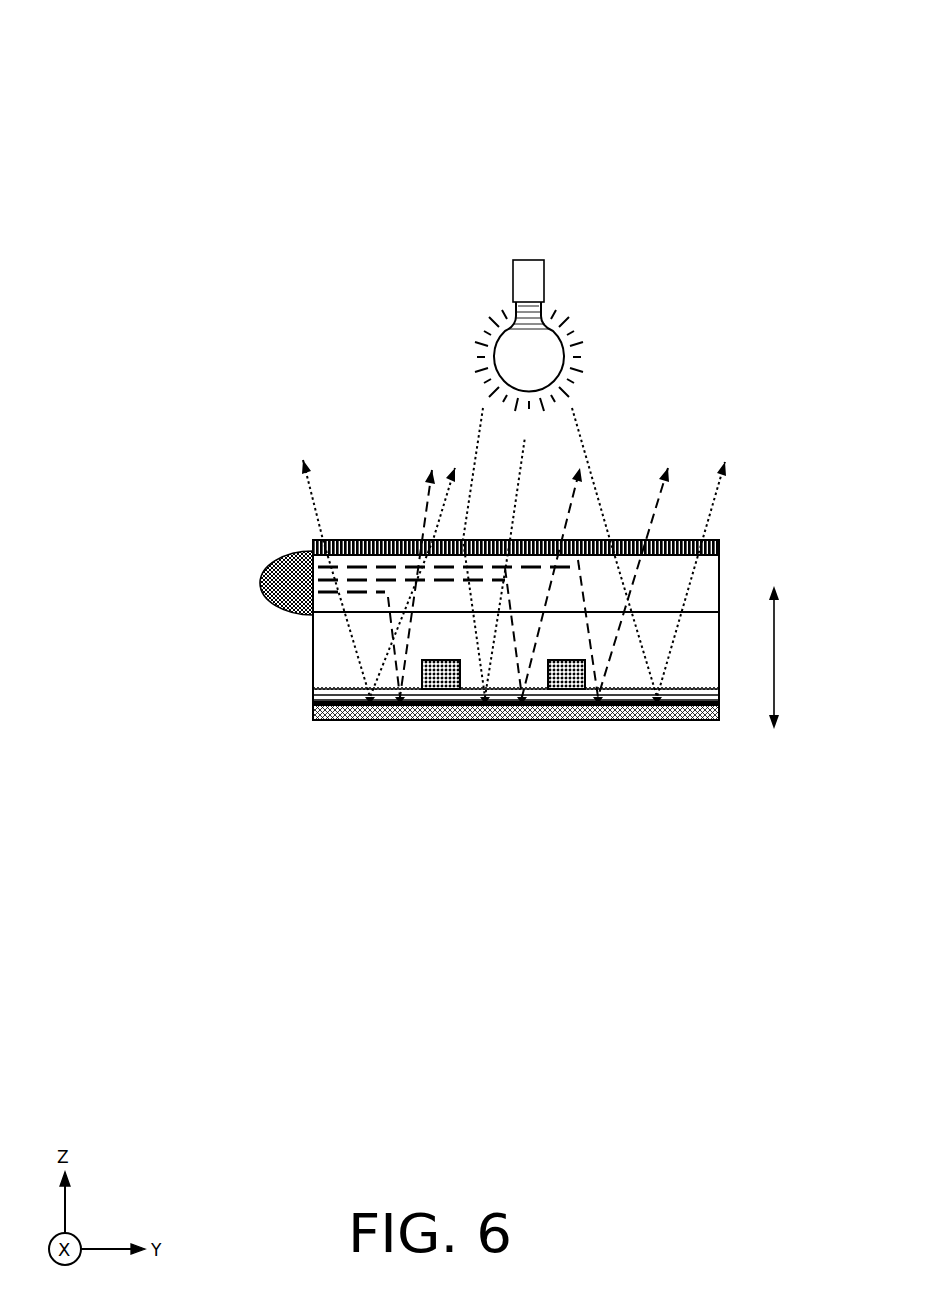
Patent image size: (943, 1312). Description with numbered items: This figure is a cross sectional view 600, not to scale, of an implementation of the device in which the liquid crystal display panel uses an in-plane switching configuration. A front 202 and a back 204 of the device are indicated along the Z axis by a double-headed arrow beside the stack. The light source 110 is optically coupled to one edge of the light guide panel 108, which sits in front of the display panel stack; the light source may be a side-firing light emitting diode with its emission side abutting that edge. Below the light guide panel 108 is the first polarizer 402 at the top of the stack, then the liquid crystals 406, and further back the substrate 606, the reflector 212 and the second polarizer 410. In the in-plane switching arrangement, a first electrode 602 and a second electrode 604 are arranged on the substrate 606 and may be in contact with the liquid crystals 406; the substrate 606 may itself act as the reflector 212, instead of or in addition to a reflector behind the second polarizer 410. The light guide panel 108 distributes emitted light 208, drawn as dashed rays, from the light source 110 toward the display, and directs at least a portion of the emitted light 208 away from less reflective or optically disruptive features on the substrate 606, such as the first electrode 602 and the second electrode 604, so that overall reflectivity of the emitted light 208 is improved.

The cross sectional view 600 is at (720, 58).
The light guide panel 108 is at (593, 592).
The light source 110 is at (283, 582).
The front 202 is at (774, 597).
The back 204 is at (774, 718).
The emitted light 208 is at (393, 567).
The reflector 212 is at (485, 706).
The first polarizer 402 is at (368, 545).
The liquid crystals 406 is at (696, 655).
The second polarizer 410 is at (322, 708).
The first electrode 602 is at (443, 673).
The second electrode 604 is at (565, 675).
The substrate 606 is at (343, 687).